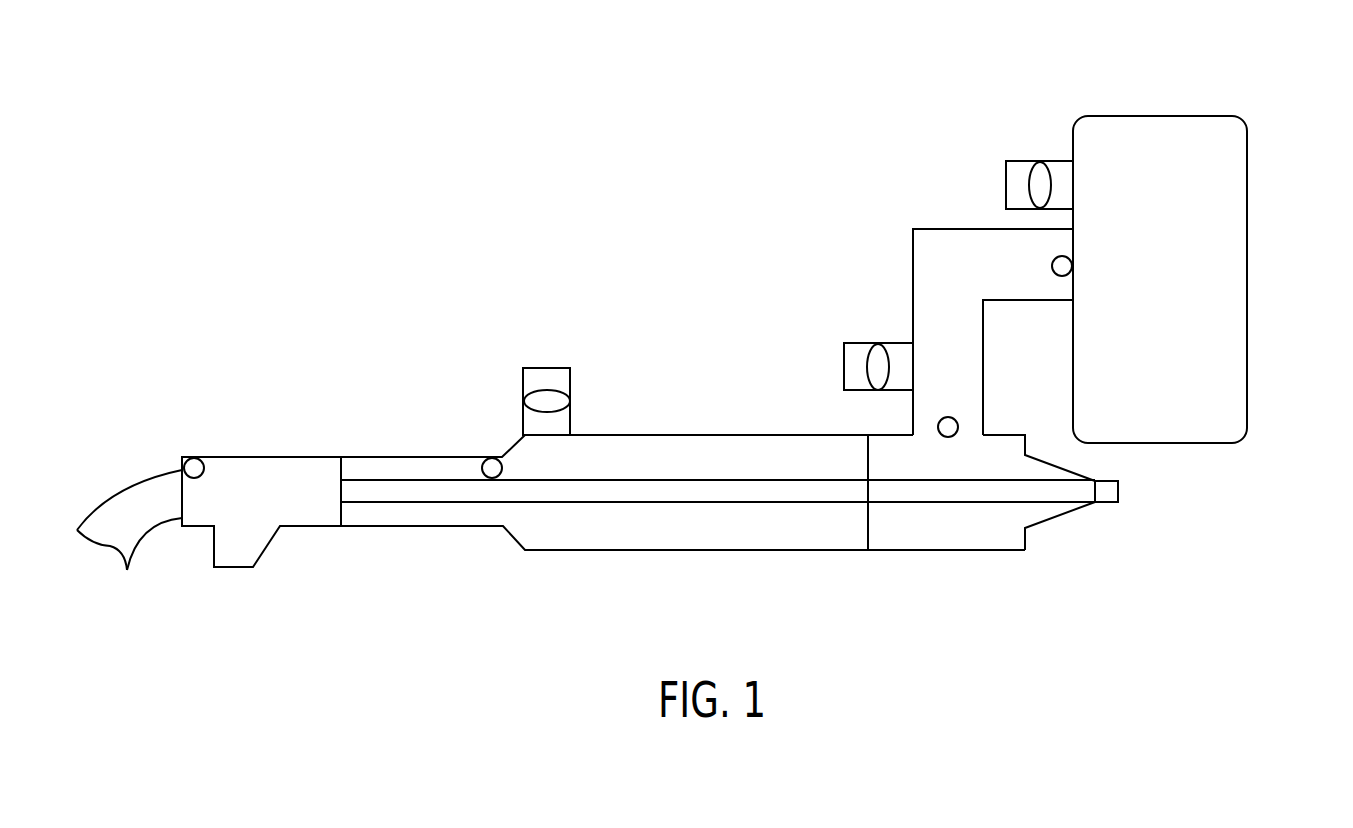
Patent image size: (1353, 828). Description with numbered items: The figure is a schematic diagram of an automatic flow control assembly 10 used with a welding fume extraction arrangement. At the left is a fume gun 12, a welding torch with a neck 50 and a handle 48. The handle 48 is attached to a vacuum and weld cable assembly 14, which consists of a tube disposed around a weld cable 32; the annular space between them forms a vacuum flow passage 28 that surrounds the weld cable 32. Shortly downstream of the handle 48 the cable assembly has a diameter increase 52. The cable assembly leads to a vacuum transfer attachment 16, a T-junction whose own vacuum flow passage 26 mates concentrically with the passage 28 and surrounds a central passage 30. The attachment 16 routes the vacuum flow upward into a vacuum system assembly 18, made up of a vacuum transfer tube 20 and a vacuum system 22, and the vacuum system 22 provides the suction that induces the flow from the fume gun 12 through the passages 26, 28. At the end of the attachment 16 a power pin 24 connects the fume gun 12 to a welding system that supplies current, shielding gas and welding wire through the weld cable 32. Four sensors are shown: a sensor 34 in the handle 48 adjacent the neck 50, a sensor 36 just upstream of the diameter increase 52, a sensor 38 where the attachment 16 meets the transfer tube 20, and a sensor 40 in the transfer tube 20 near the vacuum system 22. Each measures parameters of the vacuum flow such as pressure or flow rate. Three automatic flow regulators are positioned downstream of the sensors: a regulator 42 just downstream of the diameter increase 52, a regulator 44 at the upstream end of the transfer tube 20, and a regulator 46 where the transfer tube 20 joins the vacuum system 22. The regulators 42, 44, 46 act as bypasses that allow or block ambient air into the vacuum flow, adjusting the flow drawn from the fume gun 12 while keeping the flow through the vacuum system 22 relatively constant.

The automatic flow control assembly 10 is at (210, 199).
The fume gun 12 is at (188, 416).
The vacuum and weld cable assembly 14 is at (733, 551).
The vacuum transfer attachment 16 is at (960, 553).
The vacuum system assembly 18 is at (964, 116).
The vacuum transfer tube 20 is at (913, 285).
The vacuum system 22 is at (1248, 280).
The power pin 24 is at (1110, 493).
The vacuum flow passage 26 is at (907, 452).
The vacuum flow passage 28 is at (790, 450).
The central passage 30 is at (982, 493).
The weld cable 32 is at (700, 492).
The sensor 34 is at (199, 466).
The sensor 36 is at (493, 458).
The sensor 38 is at (953, 418).
The sensor 40 is at (1058, 272).
The automatic flow regulator 42 is at (550, 375).
The automatic flow regulator 44 is at (853, 357).
The automatic flow regulator 46 is at (1018, 170).
The handle 48 is at (270, 457).
The neck 50 is at (150, 493).
The diameter increase 52 is at (490, 555).